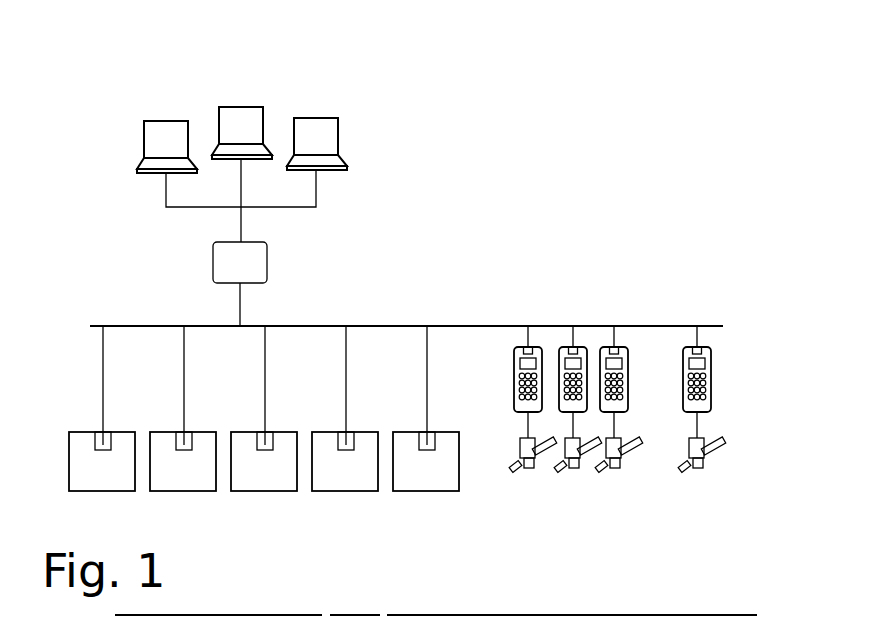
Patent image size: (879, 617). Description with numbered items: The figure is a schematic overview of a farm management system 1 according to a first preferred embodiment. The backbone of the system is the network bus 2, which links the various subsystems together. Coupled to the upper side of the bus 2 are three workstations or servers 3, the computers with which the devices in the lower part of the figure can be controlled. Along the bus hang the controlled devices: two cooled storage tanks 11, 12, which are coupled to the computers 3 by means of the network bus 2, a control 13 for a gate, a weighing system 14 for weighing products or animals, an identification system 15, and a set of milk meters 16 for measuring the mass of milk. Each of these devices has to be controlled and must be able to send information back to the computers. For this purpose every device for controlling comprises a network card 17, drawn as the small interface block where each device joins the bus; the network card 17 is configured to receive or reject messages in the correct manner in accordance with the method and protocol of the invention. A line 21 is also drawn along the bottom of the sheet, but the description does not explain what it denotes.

The farm management system 1 is at (496, 193).
The network bus 2 is at (315, 326).
The workstations or servers 3 is at (317, 133).
The cooled storage tank 11 is at (102, 462).
The cooled storage tank 12 is at (183, 462).
The control for a gate 13 is at (264, 462).
The weighing system 14 is at (345, 462).
The identification system 15 is at (426, 462).
The milk meters 16 is at (610, 462).
The network card 17 is at (103, 444).
The floor / ground line 21 is at (225, 615).